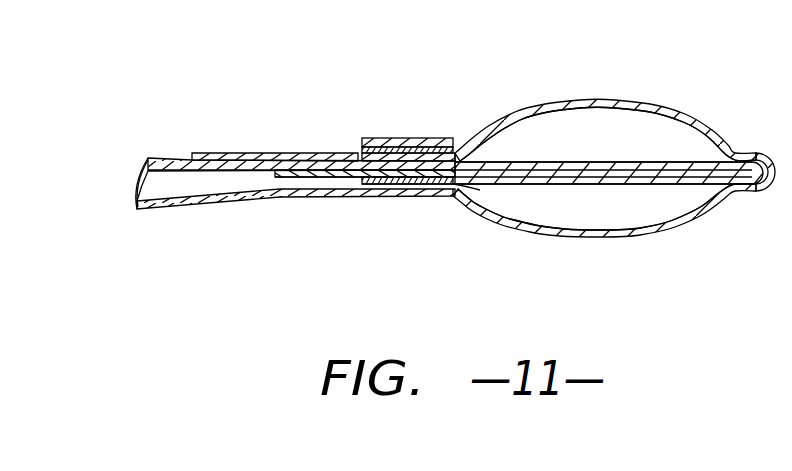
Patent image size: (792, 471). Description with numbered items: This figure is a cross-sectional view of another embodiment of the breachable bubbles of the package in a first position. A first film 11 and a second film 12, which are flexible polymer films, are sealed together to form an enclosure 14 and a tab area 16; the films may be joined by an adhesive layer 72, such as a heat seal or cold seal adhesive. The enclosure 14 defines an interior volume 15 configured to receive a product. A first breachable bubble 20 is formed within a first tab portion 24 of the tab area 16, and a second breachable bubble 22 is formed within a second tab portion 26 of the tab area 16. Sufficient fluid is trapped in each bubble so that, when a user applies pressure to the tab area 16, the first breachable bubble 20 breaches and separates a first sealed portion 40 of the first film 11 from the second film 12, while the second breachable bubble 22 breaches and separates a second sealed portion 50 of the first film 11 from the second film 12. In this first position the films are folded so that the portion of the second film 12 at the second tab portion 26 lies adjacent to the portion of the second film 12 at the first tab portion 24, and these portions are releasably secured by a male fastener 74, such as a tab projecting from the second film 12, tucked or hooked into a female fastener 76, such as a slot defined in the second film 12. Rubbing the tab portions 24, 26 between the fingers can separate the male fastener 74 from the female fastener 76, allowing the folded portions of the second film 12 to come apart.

The first film 11 is at (228, 203).
The second film 12 is at (172, 159).
The enclosure 14 is at (145, 188).
The interior volume 15 is at (150, 182).
The tab area 16 is at (449, 220).
The first breachable bubble 20 is at (592, 205).
The second breachable bubble 22 is at (592, 130).
The first tab portion 24 is at (673, 229).
The second tab portion 26 is at (679, 109).
The first sealed portion 40 is at (392, 199).
The second sealed portion 50 is at (382, 133).
The adhesive layer 72 is at (425, 150).
The male fastener 74 is at (338, 167).
The female fastener 76 is at (240, 153).